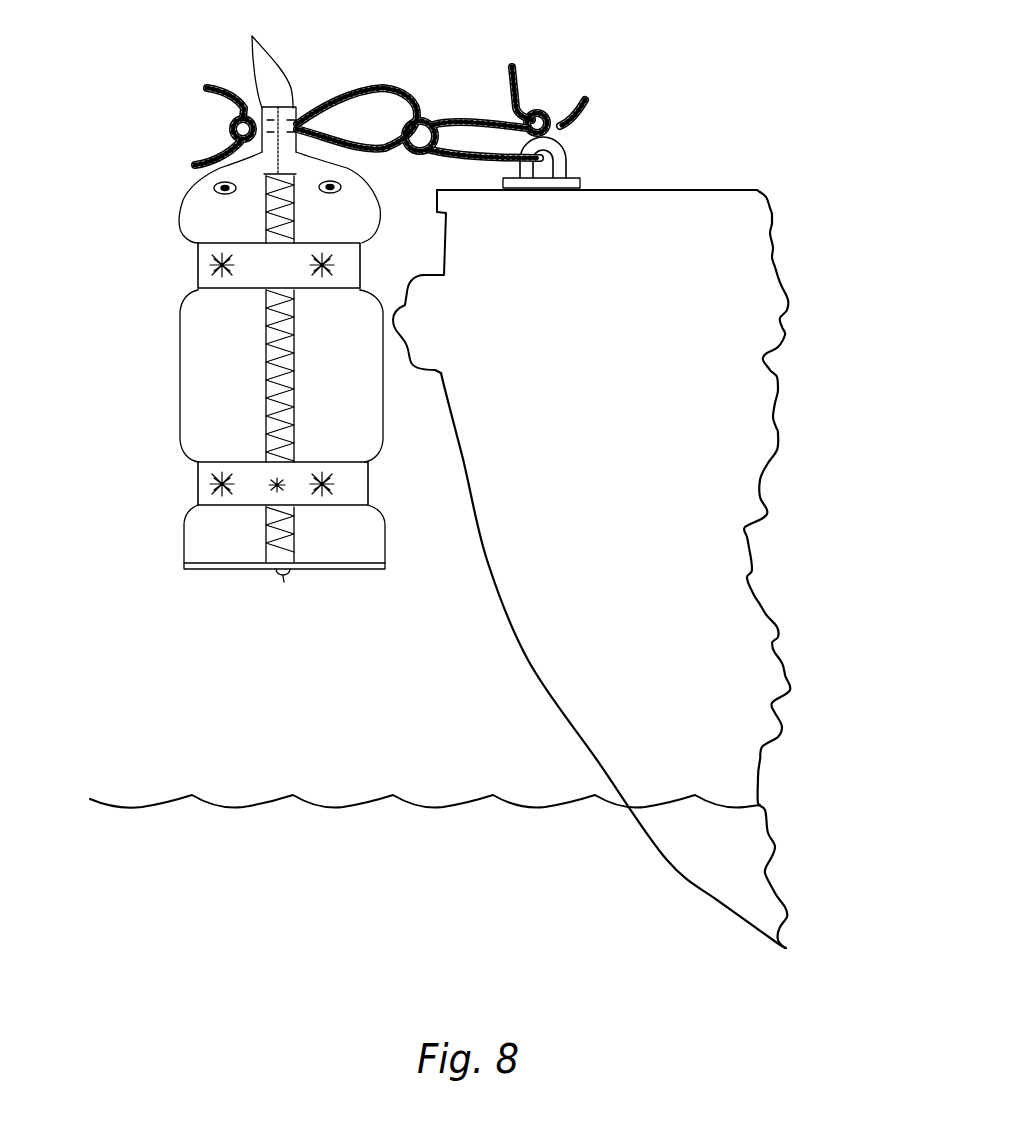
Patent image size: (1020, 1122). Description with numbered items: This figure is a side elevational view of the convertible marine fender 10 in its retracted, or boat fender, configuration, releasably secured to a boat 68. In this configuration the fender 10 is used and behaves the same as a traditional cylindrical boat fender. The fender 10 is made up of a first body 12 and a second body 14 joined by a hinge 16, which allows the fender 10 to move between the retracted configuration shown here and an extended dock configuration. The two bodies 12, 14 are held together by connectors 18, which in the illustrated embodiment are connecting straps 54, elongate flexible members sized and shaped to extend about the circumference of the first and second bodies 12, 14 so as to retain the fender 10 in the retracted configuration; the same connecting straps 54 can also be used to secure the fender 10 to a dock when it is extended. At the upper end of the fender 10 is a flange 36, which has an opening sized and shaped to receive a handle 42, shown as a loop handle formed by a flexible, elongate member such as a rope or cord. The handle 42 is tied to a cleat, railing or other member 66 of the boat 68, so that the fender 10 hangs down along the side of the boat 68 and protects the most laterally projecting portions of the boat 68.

The convertible marine fender 10 is at (268, 386).
The first body 12 is at (178, 373).
The second body 14 is at (386, 407).
The hinge 16 is at (283, 578).
The connectors 18 is at (221, 243).
The flange 36 is at (253, 37).
The handle 42 is at (344, 92).
The connecting straps 54 is at (222, 294).
The cleat, railing or other member 66 is at (570, 158).
The boat 68 is at (670, 190).